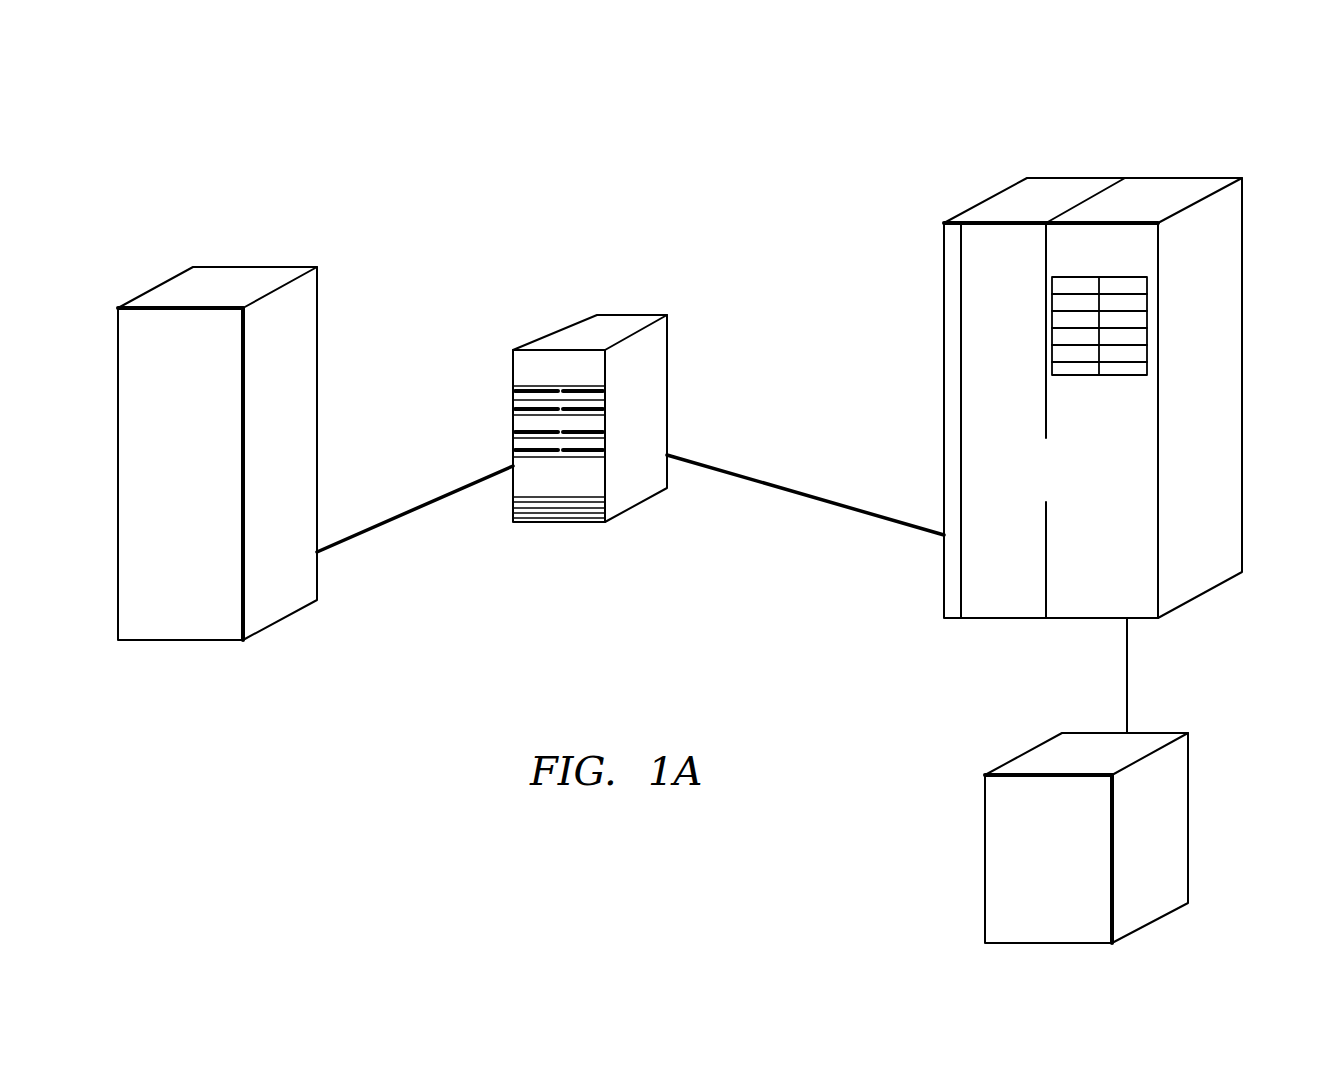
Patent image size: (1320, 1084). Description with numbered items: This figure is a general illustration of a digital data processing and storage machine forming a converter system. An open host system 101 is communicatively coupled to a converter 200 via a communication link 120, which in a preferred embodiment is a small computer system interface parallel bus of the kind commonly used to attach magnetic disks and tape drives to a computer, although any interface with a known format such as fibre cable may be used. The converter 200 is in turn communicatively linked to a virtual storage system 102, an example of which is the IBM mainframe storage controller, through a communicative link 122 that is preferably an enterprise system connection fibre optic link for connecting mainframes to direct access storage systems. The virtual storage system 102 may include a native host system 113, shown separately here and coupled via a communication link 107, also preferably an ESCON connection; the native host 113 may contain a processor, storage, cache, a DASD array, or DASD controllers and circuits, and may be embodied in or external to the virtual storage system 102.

The open host system 101 is at (317, 292).
The communication link 120 is at (419, 505).
The converter 200 is at (667, 345).
The communicative link 122 is at (762, 490).
The virtual storage system 102 is at (1072, 178).
The communication link 107 is at (1127, 690).
The native host system 113 is at (1188, 882).